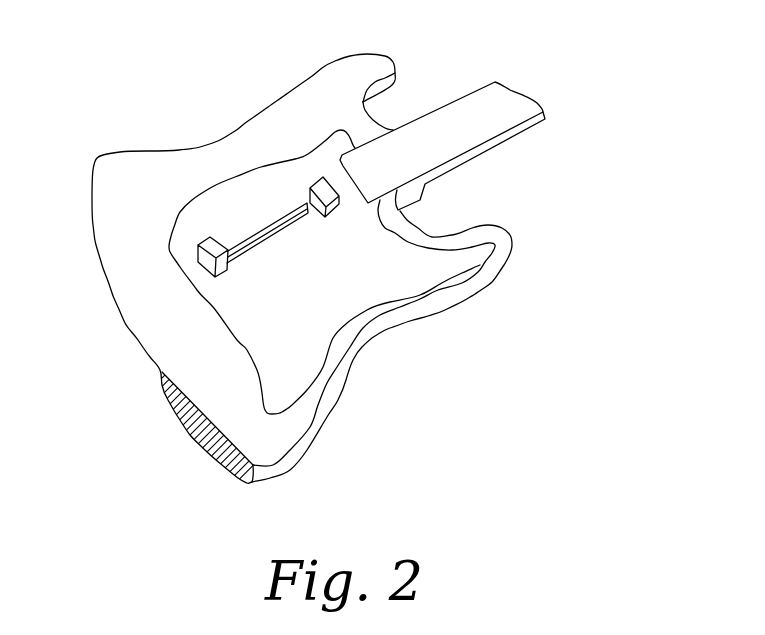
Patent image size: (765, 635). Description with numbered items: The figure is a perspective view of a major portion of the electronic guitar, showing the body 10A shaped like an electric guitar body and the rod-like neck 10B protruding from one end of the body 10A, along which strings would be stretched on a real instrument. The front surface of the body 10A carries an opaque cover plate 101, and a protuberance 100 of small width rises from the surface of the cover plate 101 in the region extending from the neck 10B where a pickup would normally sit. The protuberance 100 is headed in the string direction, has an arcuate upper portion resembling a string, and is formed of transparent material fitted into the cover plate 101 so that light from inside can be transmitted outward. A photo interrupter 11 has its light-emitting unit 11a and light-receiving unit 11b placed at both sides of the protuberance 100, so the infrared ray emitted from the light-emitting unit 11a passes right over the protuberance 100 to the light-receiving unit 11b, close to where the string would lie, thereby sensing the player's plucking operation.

The body 10A is at (285, 90).
The neck 10B is at (482, 85).
The protuberance 100 is at (276, 237).
The photo interrupter 11 is at (364, 231).
The light-emitting unit 11a is at (337, 216).
The light-receiving unit 11b is at (198, 266).
The cover plate 101 is at (442, 268).